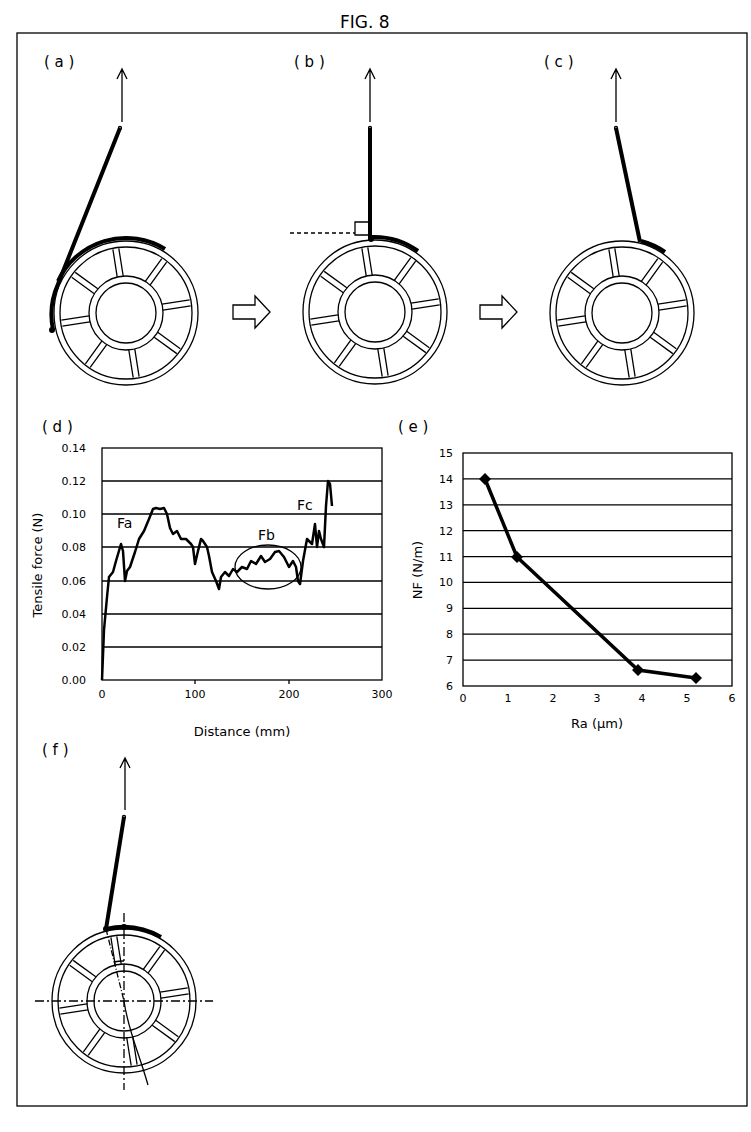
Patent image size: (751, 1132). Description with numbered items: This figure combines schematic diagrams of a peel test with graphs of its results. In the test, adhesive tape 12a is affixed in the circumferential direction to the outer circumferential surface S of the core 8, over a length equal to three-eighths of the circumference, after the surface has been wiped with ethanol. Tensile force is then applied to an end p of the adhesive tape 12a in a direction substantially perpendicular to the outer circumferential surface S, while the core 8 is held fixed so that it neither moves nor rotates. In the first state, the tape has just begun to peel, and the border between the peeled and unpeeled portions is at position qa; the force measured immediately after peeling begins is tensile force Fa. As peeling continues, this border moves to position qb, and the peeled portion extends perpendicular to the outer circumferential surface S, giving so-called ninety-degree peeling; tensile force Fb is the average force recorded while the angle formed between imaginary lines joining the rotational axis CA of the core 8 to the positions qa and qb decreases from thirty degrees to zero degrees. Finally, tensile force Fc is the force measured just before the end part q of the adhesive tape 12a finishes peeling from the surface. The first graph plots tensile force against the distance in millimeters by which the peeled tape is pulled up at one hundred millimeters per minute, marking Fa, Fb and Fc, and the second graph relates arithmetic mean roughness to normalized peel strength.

The adhesive tape 12a is at (99, 167).
The core 8 is at (191, 379).
The outer circumferential surface S is at (205, 296).
The end of the adhesive tape p is at (376, 474).
The end part of the adhesive tape q is at (364, 581).
The position qa is at (52, 334).
The position qb is at (374, 237).
The tensile force Fa is at (131, 95).
The tensile force Fb is at (257, 439).
The tensile force Fc is at (625, 95).
The rotational axis CA is at (148, 1049).